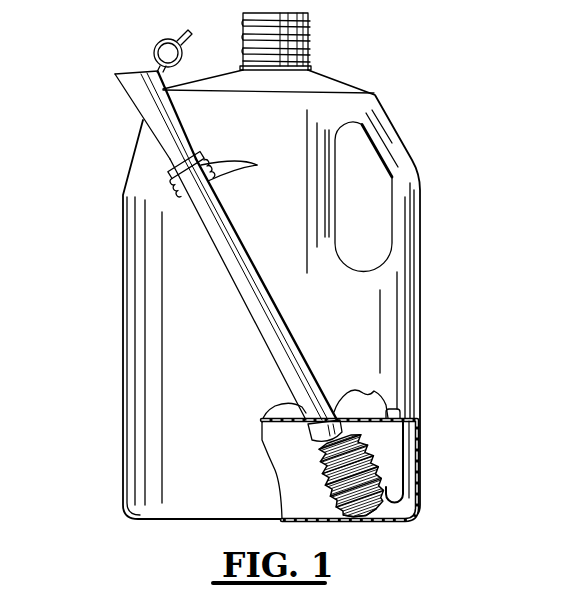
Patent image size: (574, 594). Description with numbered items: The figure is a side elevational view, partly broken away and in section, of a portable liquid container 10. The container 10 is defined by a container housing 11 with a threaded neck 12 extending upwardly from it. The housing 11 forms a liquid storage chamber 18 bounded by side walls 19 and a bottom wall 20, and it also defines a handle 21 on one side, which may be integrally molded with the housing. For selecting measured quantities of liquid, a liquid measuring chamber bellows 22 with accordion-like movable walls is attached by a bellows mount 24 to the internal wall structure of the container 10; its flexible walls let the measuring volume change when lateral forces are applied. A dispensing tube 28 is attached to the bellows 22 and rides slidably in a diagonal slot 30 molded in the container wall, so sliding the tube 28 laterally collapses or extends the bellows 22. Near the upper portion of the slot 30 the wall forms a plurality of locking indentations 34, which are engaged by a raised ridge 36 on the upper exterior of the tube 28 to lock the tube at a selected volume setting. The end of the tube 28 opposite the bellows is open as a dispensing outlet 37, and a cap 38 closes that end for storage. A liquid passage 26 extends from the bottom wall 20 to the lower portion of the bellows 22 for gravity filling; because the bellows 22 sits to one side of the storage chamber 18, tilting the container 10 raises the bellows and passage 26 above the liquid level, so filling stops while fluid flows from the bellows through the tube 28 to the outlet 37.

The portable liquid container 10 is at (437, 148).
The container housing 11 is at (123, 265).
The threaded neck 12 is at (308, 53).
The liquid storage chamber 18 is at (363, 407).
The side walls 19 is at (123, 325).
The bottom wall 20 is at (398, 410).
The handle 21 is at (382, 262).
The liquid measuring chamber bellows 22 is at (318, 483).
The bellows mount 24 is at (364, 508).
The liquid passage 26 is at (403, 452).
The dispensing tube 28 is at (268, 333).
The diagonal slot 30 is at (285, 383).
The locking indentations 34 is at (243, 178).
The raised ridge 36 is at (194, 157).
The dispensing outlet 37 is at (114, 71).
The cap 38 is at (163, 40).